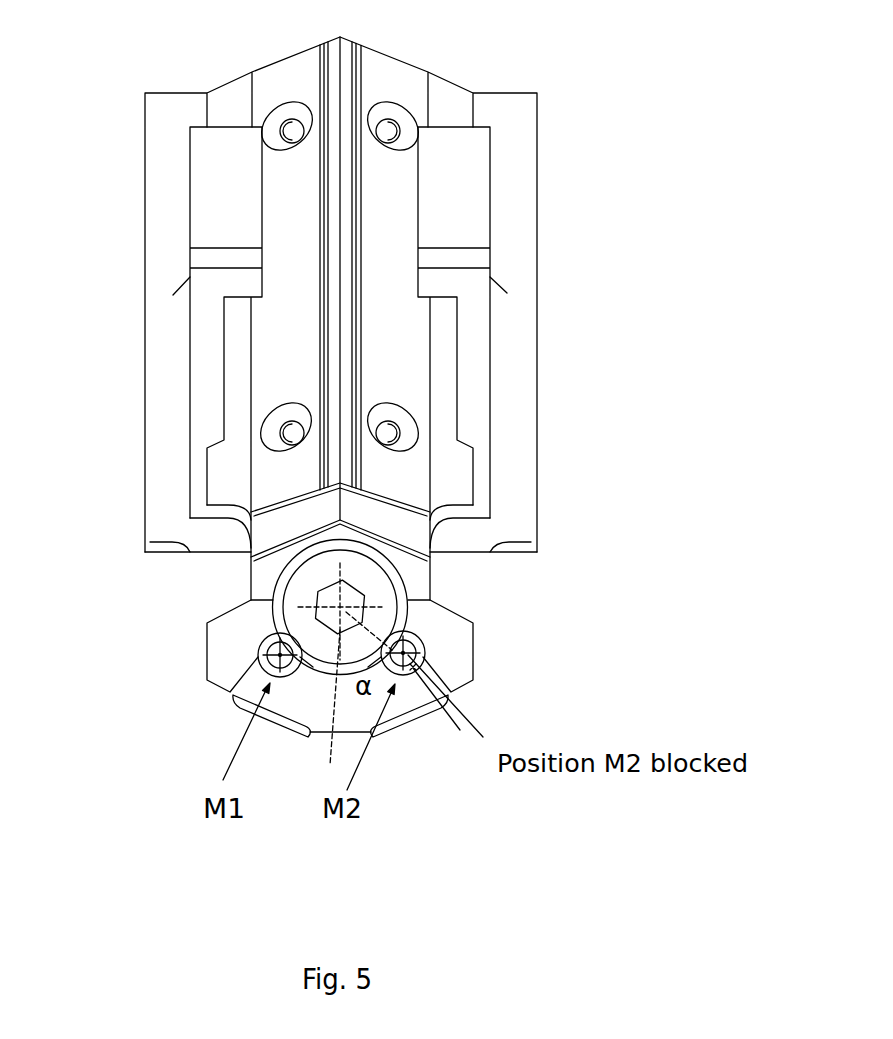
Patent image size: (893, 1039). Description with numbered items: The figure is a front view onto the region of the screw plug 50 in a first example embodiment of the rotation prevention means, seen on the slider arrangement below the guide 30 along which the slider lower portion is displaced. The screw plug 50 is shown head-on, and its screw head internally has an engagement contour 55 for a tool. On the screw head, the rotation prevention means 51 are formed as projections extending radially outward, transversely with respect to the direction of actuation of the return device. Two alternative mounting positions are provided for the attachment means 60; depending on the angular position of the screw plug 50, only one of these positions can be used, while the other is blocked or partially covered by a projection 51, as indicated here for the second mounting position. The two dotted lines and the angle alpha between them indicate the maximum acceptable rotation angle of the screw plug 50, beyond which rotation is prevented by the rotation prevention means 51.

The guide 30 is at (400, 62).
The screw plug 50 is at (380, 594).
The rotation prevention means 51 is at (270, 600).
The engagement contour 55 is at (345, 600).
The attachment means 60 is at (258, 656).